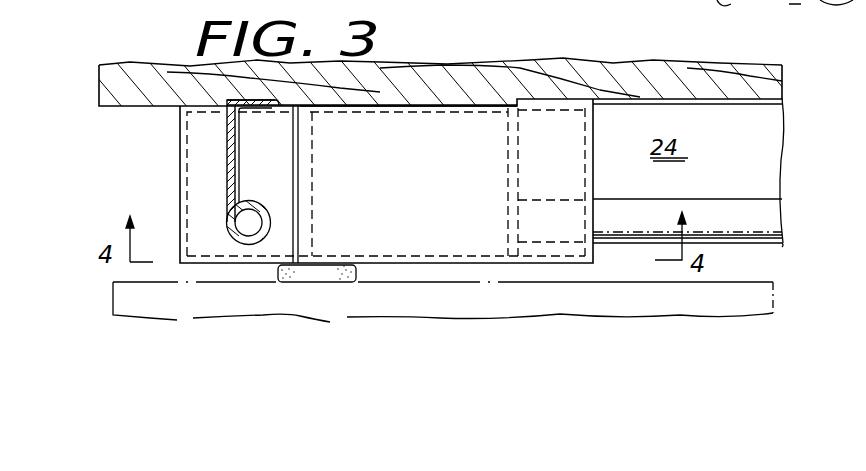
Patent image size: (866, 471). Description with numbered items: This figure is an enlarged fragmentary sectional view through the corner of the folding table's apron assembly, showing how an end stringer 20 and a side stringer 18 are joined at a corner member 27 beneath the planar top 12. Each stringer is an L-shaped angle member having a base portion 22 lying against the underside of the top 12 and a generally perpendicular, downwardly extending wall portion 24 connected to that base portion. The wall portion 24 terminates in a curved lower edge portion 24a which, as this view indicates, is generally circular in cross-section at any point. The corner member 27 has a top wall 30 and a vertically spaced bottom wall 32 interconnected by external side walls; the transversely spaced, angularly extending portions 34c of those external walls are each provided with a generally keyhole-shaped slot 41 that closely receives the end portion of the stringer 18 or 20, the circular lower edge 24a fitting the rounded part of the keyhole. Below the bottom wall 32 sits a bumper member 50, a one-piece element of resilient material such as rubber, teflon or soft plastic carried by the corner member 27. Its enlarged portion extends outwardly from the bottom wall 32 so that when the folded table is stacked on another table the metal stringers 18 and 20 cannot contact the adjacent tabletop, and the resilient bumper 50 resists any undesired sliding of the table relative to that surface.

The top 12 is at (600, 64).
The top wall 30 is at (452, 106).
The corner member 27 is at (486, 252).
The angularly extending portion 34c is at (207, 192).
The end stringer 20 is at (226, 132).
The wall portion 24 is at (224, 160).
The base portion 22 is at (272, 110).
The keyhole shaped slot 41 is at (236, 184).
The curved lower edge portion 24a is at (271, 212).
The bottom wall 32 is at (246, 268).
The bumper member 50 is at (354, 282).
The side stringer 18 is at (742, 167).